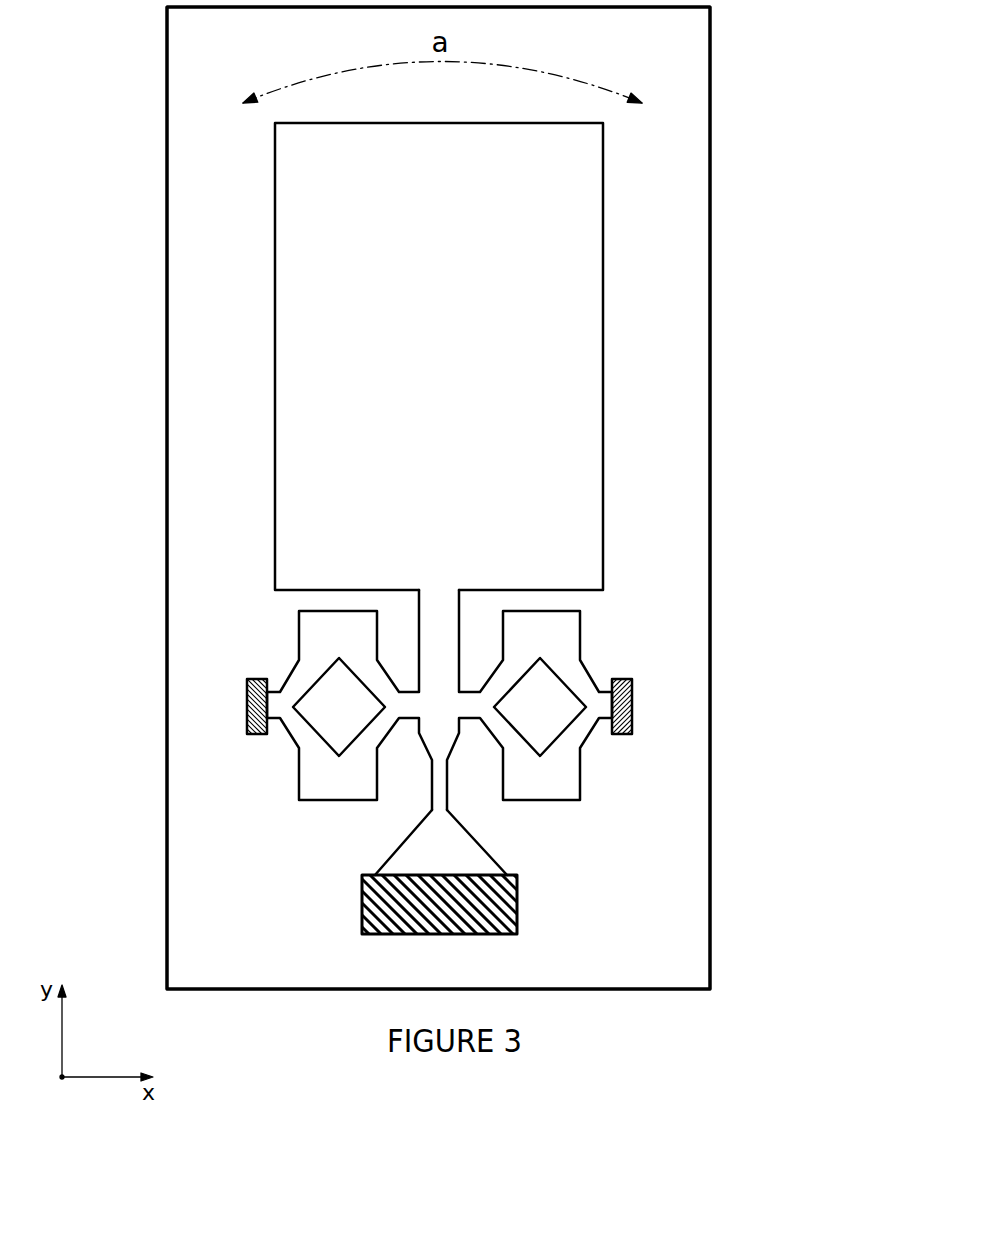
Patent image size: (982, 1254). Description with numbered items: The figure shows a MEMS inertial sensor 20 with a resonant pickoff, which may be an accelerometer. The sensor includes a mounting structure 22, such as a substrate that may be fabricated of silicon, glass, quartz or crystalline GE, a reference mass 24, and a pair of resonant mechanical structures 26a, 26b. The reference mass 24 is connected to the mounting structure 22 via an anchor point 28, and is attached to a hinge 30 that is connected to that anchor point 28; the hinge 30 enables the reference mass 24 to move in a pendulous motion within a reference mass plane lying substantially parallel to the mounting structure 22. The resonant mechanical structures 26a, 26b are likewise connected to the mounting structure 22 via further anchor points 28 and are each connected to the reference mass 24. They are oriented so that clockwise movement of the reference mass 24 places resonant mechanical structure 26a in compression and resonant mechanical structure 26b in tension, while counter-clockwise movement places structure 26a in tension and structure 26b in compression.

The MEMS inertial sensor 20 is at (768, 366).
The mounting structure 22 is at (268, 923).
The reference mass 24 is at (275, 392).
The resonant mechanical structure 26a is at (580, 636).
The resonant mechanical structure 26b is at (300, 637).
The anchor point 28 is at (247, 707).
The hinge 30 is at (433, 800).